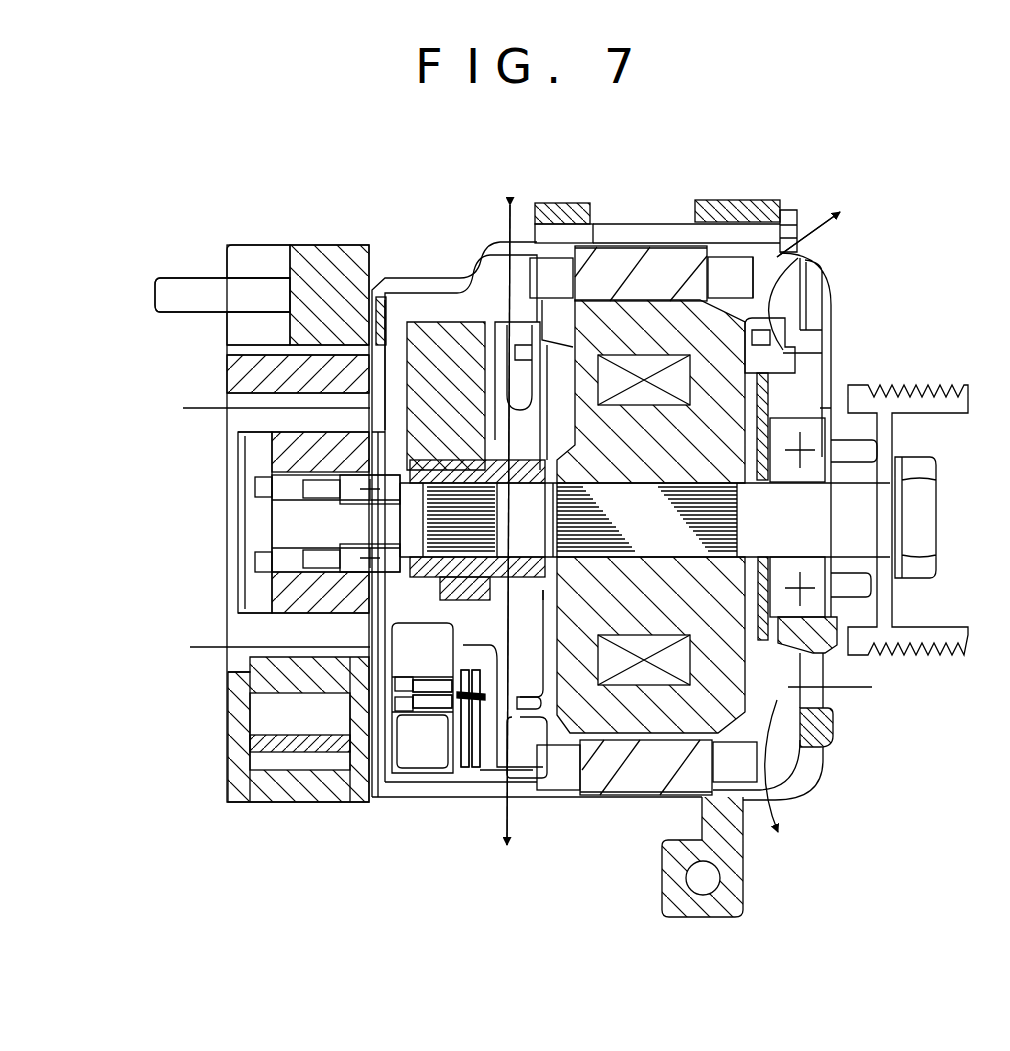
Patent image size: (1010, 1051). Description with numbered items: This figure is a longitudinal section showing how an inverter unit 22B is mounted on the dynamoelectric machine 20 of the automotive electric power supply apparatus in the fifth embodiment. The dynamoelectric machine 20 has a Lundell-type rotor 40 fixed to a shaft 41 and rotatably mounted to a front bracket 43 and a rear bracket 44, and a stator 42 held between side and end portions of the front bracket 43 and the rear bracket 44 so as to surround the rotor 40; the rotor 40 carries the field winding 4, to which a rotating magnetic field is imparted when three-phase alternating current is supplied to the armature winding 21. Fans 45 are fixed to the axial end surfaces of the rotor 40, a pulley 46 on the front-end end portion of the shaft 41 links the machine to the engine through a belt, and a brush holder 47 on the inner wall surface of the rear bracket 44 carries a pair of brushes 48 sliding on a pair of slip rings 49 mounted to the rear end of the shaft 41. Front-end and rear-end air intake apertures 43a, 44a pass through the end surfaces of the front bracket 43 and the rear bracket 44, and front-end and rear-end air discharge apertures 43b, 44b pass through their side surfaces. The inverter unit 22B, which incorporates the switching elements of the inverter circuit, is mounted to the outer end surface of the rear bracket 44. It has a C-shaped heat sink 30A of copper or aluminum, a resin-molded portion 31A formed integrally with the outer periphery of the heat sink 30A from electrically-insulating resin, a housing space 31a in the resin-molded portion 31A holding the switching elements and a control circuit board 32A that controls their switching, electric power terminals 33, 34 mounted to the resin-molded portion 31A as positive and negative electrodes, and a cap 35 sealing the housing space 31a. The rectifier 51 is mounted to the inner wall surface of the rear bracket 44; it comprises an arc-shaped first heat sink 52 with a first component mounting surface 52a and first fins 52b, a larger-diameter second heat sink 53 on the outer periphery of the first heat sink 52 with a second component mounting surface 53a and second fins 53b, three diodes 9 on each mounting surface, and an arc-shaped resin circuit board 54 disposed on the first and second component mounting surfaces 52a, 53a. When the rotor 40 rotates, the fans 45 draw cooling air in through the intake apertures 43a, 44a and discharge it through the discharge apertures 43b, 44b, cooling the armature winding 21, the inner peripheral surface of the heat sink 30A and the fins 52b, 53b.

The dynamoelectric machine 20 is at (837, 268).
The armature winding 21 is at (555, 777).
The inverter unit 22B is at (237, 243).
The heat sink 30A is at (221, 365).
The resin-molded portion 31A is at (322, 242).
The housing space 31a is at (266, 762).
The control circuit board 32A is at (266, 735).
The electric power terminal 33 is at (183, 290).
The electric power terminal 34 is at (183, 290).
The cap 35 is at (233, 702).
The rotor 40 is at (698, 322).
The shaft 41 is at (878, 517).
The stator 42 is at (645, 244).
The front bracket 43 is at (838, 301).
The front-end air intake aperture 43a is at (814, 333).
The front-end air discharge aperture 43b is at (807, 240).
The rear bracket 44 is at (466, 253).
The rear-end air intake aperture 44a is at (380, 357).
The rear-end air discharge aperture 44b is at (517, 238).
The fans 45 is at (772, 352).
The pulley 46 is at (935, 396).
The brush holder 47 is at (445, 322).
The brushes 48 is at (477, 460).
The slip rings 49 is at (452, 587).
The field winding 4 is at (547, 640).
The diodes 9 is at (435, 667).
The rectifier 51 is at (393, 775).
The first heat sink 52 is at (398, 760).
The first component mounting surface 52a is at (398, 760).
The first fins 52b is at (392, 742).
The second heat sink 53 is at (445, 755).
The second component mounting surface 53a is at (425, 755).
The second fins 53b is at (445, 755).
The circuit board 54 is at (507, 544).